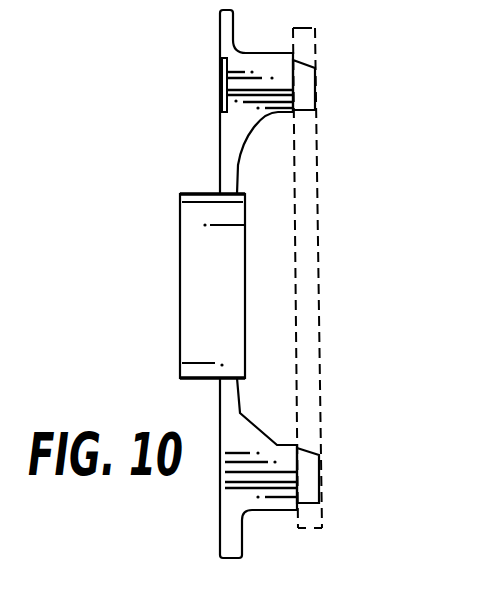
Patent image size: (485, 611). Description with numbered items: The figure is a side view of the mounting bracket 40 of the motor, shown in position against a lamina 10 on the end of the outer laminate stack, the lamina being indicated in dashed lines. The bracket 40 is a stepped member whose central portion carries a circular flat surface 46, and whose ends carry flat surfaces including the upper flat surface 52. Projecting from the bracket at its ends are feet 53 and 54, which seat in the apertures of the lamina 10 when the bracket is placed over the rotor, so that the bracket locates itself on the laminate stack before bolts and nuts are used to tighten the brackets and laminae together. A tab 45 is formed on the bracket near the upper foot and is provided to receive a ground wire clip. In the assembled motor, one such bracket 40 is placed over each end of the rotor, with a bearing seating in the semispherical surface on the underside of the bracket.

The lamina 10 is at (312, 28).
The mounting bracket 40 is at (206, 49).
The tab 45 is at (218, 78).
The circular flat surface 46 is at (180, 260).
The upper flat surface 52 is at (220, 548).
The foot 53 is at (315, 93).
The foot 54 is at (313, 479).